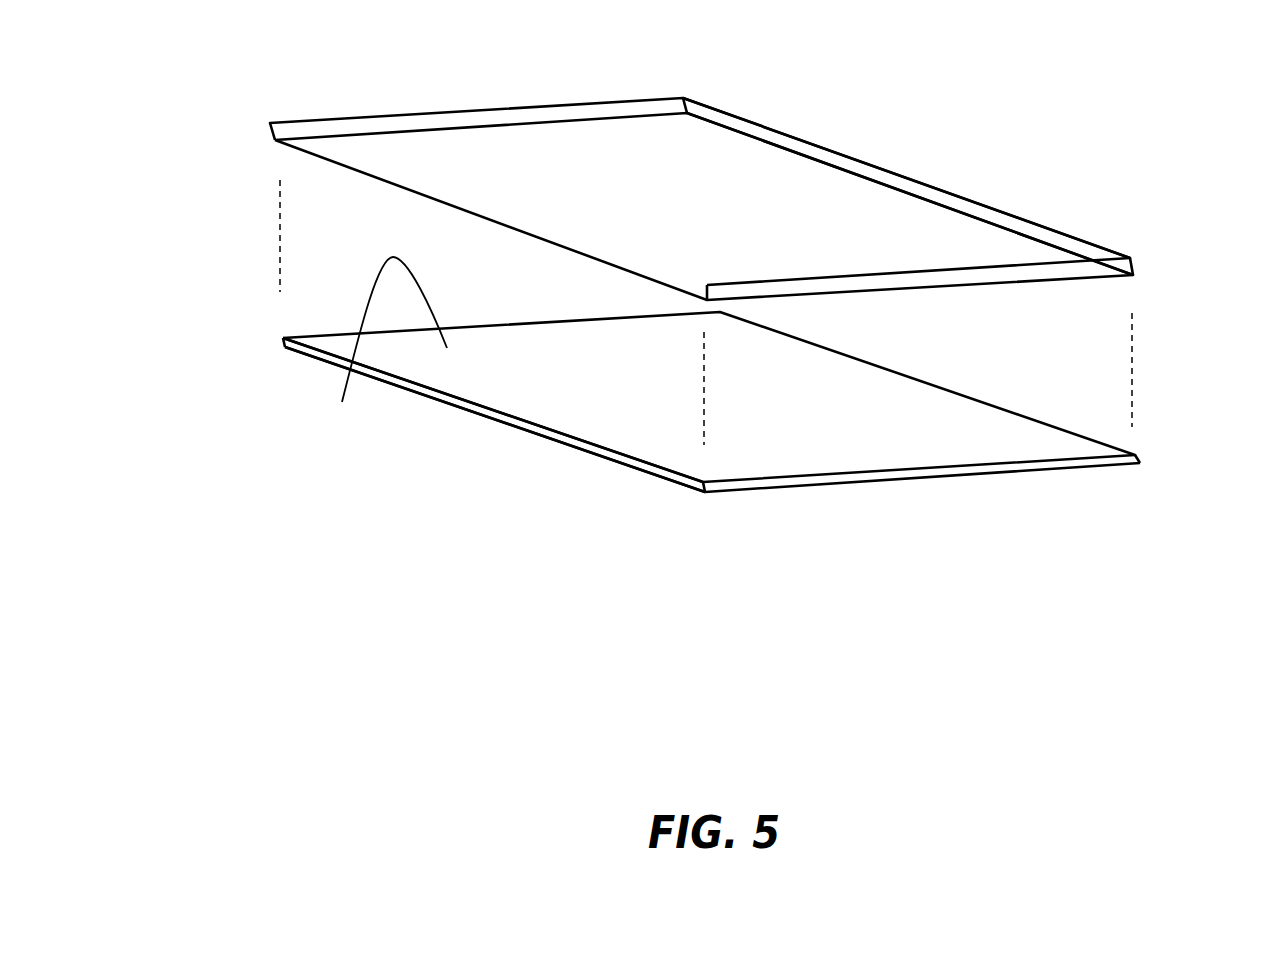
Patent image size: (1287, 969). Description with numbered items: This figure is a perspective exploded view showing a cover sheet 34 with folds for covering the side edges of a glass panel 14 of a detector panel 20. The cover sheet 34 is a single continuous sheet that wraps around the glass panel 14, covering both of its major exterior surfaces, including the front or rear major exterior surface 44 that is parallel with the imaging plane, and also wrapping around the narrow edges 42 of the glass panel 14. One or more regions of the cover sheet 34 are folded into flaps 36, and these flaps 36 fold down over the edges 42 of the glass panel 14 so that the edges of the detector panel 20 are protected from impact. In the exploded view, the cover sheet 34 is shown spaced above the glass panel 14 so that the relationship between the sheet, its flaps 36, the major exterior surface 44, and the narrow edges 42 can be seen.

The glass panel 14 is at (283, 340).
The detector panel 20 is at (1091, 596).
The cover sheet 34 is at (393, 152).
The flaps 36 is at (1063, 230).
The narrow edges 42 is at (733, 485).
The major exterior surface 44 is at (470, 413).